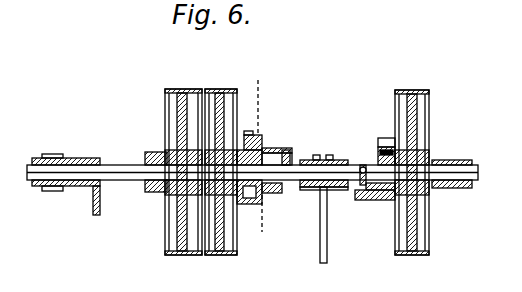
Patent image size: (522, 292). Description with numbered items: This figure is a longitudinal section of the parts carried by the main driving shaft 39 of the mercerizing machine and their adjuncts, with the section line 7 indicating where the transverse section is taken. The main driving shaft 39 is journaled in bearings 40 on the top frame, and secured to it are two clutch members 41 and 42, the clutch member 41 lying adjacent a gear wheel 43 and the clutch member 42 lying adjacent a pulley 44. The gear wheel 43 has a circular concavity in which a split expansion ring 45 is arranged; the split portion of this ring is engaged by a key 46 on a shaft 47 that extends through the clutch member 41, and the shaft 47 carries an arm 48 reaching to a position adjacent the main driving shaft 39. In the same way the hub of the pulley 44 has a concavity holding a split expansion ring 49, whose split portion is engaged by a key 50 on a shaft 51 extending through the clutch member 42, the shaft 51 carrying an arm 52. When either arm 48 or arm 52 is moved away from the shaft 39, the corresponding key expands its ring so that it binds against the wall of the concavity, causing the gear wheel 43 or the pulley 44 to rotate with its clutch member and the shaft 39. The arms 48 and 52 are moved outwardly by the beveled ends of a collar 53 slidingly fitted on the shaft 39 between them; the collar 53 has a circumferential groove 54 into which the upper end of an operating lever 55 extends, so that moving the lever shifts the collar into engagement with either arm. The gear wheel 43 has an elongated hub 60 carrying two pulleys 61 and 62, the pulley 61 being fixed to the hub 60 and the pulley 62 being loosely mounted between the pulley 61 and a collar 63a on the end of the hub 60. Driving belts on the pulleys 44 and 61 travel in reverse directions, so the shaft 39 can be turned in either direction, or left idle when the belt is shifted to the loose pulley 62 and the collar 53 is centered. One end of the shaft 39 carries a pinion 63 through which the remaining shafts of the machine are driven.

The section line 7— 7 is at (259, 164).
The main driving shaft 39 is at (113, 166).
The bearings 40 is at (78, 158).
The clutch member 41 is at (262, 192).
The clutch member 42 is at (378, 157).
The gear wheel 43 is at (258, 140).
The pulley 44 is at (415, 89).
The split expansion ring 45 is at (266, 210).
The key 46 is at (252, 131).
The shaft 47 is at (275, 149).
The arm 48 is at (290, 160).
The split expansion ring 49 is at (390, 138).
The key 50 is at (384, 201).
The shaft 51 is at (368, 191).
The arm 52 is at (358, 186).
The collar 53 is at (310, 190).
The circumferential groove 54 is at (325, 157).
The operating lever 55 is at (320, 262).
The elongated hub 60 is at (170, 193).
The pulley 61 is at (233, 88).
The pulley 62 is at (178, 88).
The pinion 63 is at (55, 191).
The collar 63a is at (158, 152).